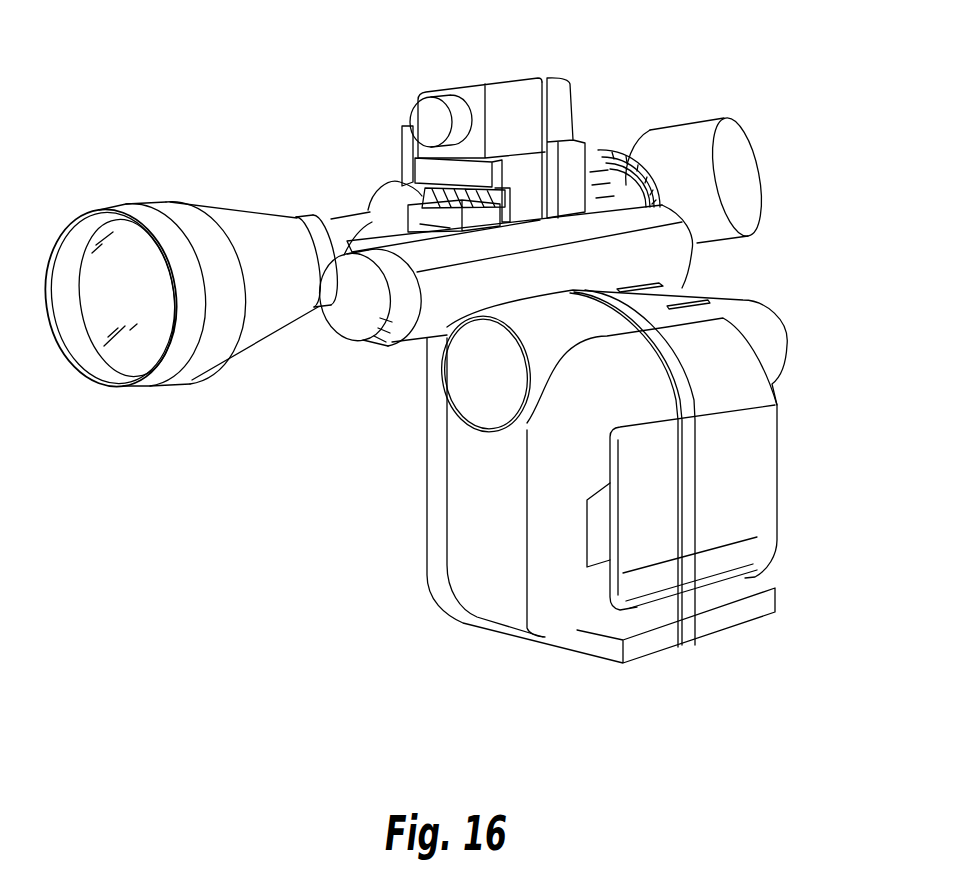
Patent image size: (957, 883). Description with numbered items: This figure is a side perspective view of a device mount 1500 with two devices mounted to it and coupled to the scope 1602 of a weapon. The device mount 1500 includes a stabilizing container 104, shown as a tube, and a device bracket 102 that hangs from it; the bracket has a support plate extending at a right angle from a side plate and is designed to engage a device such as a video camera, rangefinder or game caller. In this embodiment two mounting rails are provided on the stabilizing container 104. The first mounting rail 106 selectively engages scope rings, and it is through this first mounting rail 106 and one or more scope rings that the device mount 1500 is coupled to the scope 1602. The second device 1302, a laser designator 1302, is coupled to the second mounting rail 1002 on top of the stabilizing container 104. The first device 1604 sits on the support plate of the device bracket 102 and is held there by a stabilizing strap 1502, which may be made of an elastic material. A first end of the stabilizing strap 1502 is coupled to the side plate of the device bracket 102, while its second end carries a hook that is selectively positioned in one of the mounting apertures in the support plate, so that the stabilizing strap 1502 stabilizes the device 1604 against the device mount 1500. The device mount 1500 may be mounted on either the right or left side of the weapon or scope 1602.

The device mount 1500 is at (268, 453).
The first mounting rail 106 is at (367, 208).
The laser designator 1302 is at (463, 85).
The second mounting rail 1002 is at (635, 160).
The scope 1602 is at (715, 137).
The stabilizing container 104 is at (668, 253).
The device bracket 102 is at (430, 478).
The device 1604 is at (752, 473).
The stabilizing strap 1502 is at (687, 620).